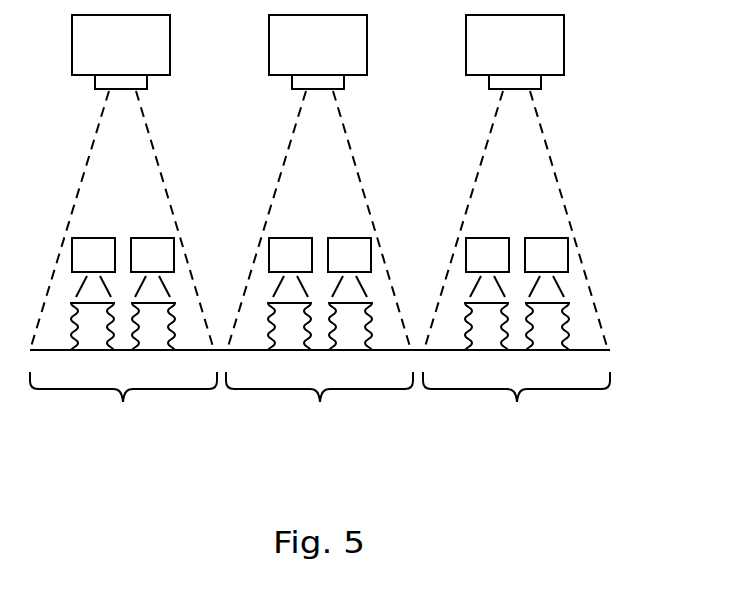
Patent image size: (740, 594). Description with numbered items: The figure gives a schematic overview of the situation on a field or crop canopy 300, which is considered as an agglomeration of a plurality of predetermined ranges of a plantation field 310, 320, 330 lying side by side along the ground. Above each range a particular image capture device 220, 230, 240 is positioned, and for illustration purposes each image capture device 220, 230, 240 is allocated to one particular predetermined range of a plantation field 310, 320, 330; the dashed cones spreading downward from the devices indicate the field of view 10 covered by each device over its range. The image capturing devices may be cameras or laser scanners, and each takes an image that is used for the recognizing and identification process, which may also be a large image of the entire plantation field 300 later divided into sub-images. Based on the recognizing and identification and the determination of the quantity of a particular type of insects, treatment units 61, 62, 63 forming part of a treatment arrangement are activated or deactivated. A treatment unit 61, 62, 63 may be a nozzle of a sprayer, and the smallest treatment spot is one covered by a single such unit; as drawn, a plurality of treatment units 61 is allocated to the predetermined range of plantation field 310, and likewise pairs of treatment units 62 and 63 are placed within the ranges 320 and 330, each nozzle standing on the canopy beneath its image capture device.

The light beam 10 is at (160, 172).
The treatment unit 61 is at (123, 294).
The treatment unit 62 is at (320, 294).
The treatment unit 63 is at (517, 294).
The image capture device 220 is at (121, 52).
The image capture device 230 is at (318, 52).
The image capture device 240 is at (515, 52).
The crop canopy 300 is at (28, 435).
The predetermined range of a plantation field 310 is at (123, 405).
The predetermined range of a plantation field 320 is at (319, 405).
The predetermined range of a plantation field 330 is at (516, 405).